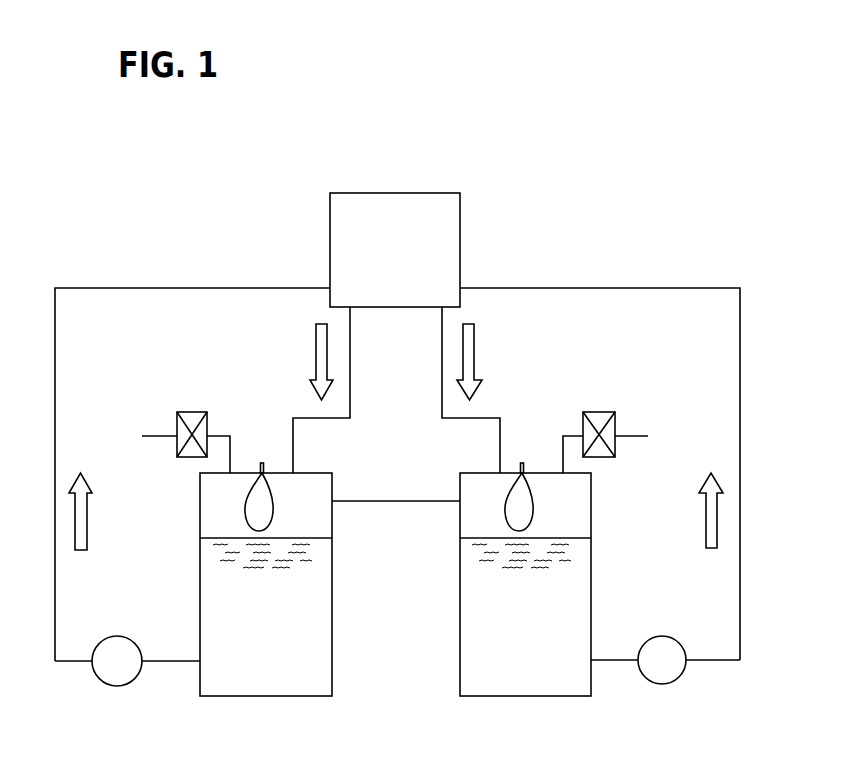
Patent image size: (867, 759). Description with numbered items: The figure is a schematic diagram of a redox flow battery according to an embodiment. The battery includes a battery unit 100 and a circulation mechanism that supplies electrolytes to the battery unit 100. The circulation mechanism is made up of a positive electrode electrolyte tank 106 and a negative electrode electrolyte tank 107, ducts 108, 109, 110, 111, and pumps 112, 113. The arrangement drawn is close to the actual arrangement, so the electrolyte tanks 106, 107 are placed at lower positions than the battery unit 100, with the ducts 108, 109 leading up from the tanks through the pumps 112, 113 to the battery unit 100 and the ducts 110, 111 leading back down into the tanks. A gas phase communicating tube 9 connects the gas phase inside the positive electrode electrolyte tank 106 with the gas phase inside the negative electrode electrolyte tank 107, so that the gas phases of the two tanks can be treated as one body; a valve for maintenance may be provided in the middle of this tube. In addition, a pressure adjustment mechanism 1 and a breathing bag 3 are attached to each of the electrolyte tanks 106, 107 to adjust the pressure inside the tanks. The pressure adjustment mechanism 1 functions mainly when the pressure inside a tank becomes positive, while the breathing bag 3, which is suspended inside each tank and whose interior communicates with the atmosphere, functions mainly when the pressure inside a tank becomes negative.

The pressure adjustment mechanism 1 is at (195, 412).
The breathing bag 3 is at (257, 515).
The gas phase communicating tube 9 is at (405, 503).
The battery unit 100 is at (437, 193).
The positive electrode electrolyte tank 106 is at (200, 553).
The negative electrode electrolyte tank 107 is at (591, 556).
The duct 108 is at (210, 287).
The duct 109 is at (590, 287).
The duct 110 is at (322, 420).
The duct 111 is at (460, 420).
The pump 112 is at (120, 636).
The pump 113 is at (670, 636).